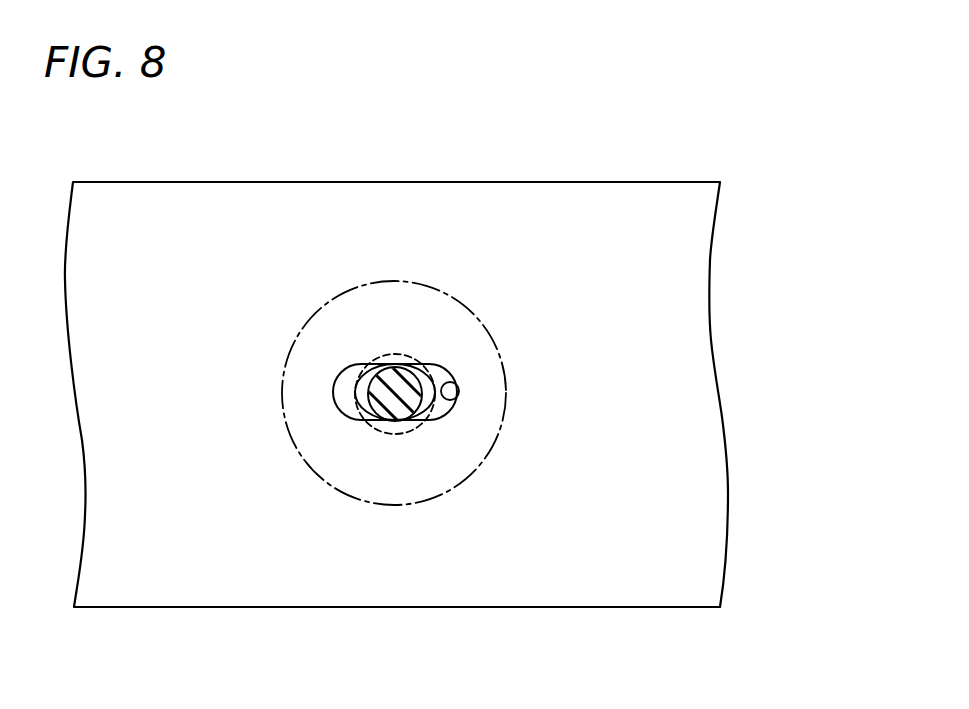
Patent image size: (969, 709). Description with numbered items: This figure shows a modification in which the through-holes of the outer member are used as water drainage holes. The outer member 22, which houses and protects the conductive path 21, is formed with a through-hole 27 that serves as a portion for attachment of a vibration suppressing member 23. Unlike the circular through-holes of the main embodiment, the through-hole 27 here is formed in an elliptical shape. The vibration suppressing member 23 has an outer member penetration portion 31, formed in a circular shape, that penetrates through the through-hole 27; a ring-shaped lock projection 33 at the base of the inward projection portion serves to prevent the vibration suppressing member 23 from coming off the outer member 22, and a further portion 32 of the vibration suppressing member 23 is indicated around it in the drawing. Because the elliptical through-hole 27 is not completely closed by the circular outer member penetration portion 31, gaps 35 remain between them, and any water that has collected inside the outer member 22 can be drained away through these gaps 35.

The conductive path 21 is at (683, 415).
The outer member 22 is at (601, 216).
The vibration suppressing member 23 is at (392, 385).
The through-hole 27 is at (457, 405).
The outer member penetration portion 31 is at (398, 388).
The large dashed region circle 32 is at (383, 488).
The lock projection 33 is at (425, 380).
The gap 35 is at (352, 395).